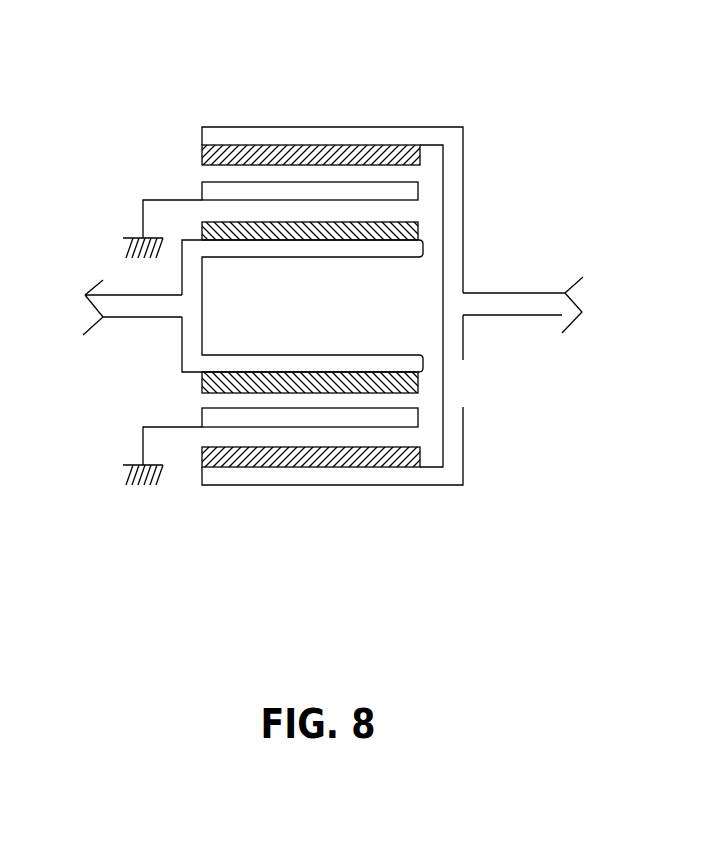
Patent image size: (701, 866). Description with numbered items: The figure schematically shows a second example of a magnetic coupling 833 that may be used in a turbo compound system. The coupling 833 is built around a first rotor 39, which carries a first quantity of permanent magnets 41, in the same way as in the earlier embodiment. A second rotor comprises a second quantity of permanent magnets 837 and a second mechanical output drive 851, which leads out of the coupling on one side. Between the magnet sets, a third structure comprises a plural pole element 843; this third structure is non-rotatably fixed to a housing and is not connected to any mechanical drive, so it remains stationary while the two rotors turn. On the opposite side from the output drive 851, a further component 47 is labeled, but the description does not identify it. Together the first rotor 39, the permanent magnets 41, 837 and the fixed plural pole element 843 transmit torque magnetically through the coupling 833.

The coupling 833 is at (456, 75).
The second quantity of permanent magnets 837 is at (189, 151).
The plural pole element 843 is at (189, 188).
The first quantity of permanent magnets 41 is at (434, 219).
The first rotor 39 is at (173, 356).
The signal lead wire 47 is at (133, 295).
The second mechanical output drive 851 is at (487, 293).